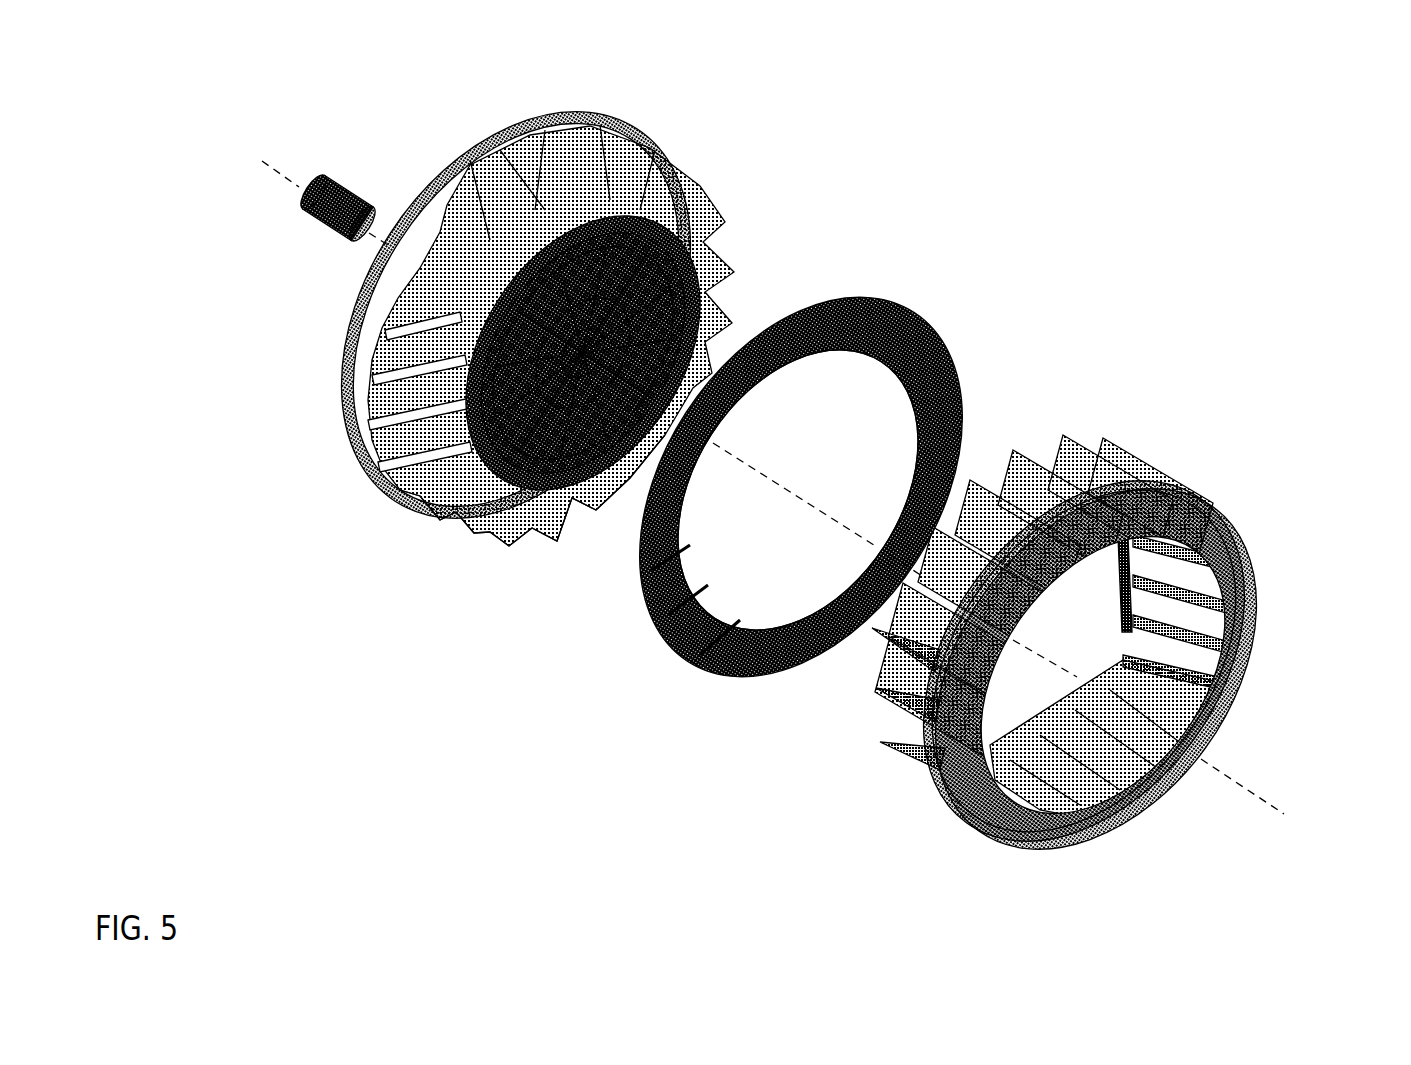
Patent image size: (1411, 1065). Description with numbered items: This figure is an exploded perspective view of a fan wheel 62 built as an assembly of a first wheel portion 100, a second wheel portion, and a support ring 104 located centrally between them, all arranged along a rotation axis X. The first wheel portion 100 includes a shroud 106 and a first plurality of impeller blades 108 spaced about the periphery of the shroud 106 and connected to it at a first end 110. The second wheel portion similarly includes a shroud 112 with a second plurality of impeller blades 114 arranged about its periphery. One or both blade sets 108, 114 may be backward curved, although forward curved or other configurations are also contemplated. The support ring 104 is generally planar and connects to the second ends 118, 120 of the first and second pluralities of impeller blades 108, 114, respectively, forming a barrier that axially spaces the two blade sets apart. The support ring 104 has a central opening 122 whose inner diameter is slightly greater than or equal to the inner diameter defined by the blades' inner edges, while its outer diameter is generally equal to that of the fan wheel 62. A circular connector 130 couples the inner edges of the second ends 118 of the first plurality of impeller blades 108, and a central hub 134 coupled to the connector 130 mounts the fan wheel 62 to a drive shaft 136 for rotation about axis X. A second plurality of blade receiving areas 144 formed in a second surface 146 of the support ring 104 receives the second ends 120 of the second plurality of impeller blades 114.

The fan wheel 62 is at (1028, 187).
The first wheel portion 100 is at (1175, 417).
The support ring 104 is at (878, 287).
The shroud 106 is at (535, 115).
The first plurality of impeller blades 108 is at (369, 294).
The first end 110 is at (493, 133).
The shroud 112 is at (1221, 505).
The second plurality of impeller blades 114 is at (1243, 658).
The second end 118 is at (522, 530).
The second end 120 is at (863, 685).
The central opening 122 is at (820, 423).
The circular connector 130 is at (693, 178).
The central hub 134 is at (610, 140).
The drive shaft 136 is at (325, 172).
The second plurality of blade receiving areas 144 is at (640, 590).
The second surface 146 is at (683, 673).